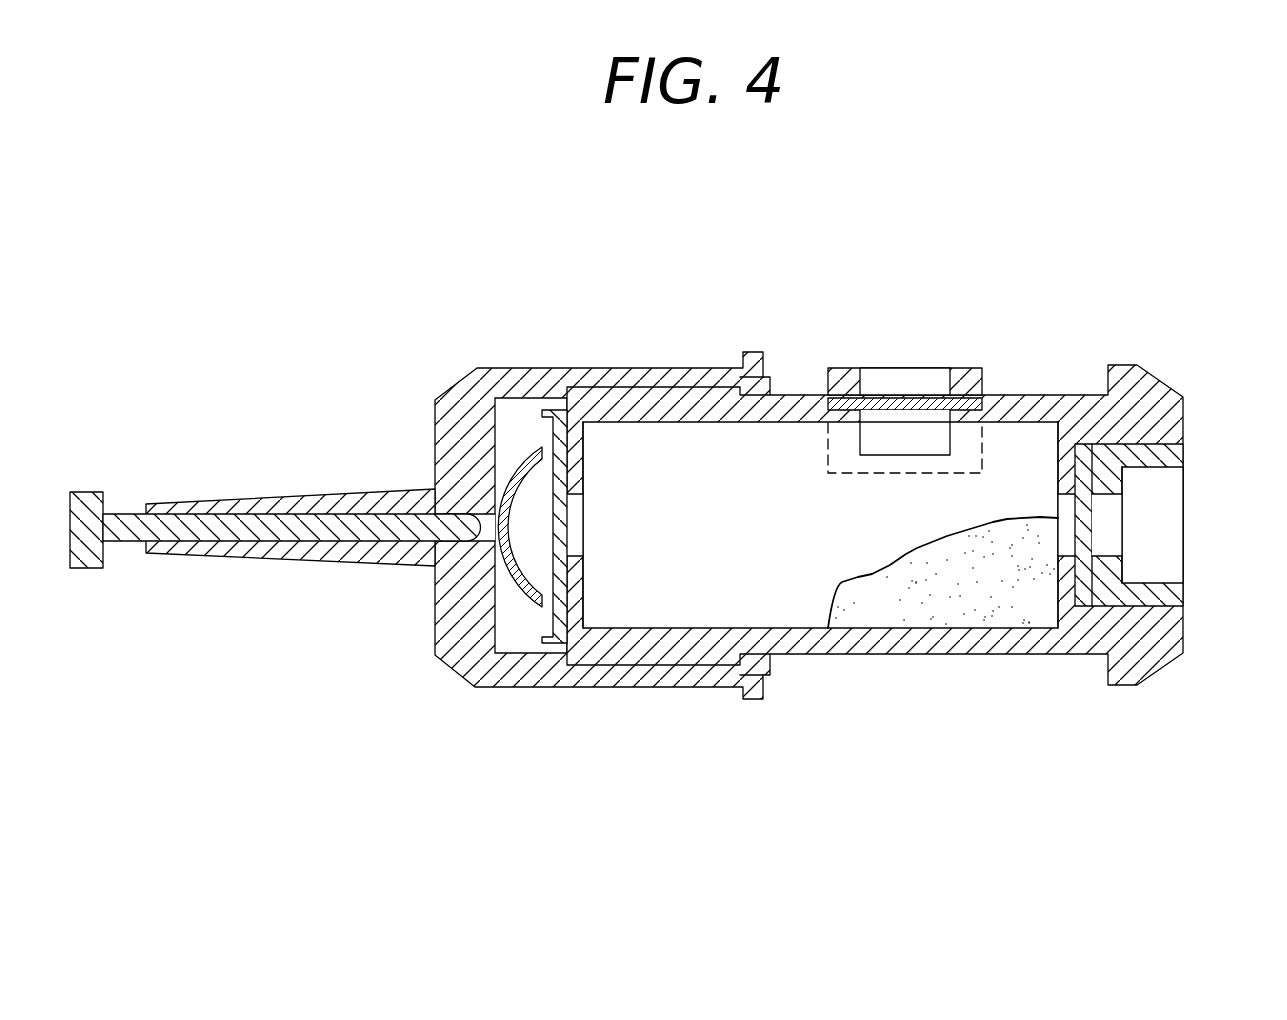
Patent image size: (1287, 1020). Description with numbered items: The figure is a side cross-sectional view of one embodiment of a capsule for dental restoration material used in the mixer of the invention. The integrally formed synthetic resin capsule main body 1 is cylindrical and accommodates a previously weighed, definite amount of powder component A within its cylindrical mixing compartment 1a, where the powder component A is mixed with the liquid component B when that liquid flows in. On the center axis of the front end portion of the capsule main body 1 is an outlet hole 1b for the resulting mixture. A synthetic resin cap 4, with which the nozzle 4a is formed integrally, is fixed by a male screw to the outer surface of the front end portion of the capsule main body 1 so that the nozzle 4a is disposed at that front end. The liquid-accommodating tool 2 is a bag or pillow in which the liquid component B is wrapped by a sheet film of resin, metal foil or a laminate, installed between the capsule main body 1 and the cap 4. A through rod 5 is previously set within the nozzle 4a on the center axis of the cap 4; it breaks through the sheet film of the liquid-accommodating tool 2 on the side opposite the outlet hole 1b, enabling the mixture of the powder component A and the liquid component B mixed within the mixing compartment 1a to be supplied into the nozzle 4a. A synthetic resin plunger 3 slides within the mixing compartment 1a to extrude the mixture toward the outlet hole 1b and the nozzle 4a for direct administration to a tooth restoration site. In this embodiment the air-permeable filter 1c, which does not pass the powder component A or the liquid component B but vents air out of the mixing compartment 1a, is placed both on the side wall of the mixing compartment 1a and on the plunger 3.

The capsule main body 1 is at (1040, 403).
The mixing compartment 1a is at (765, 467).
The outlet hole 1b is at (583, 520).
The air-permeable filter 1c is at (910, 393).
The liquid-accommodating tool 2 is at (510, 613).
The plunger 3 is at (1173, 618).
The cap 4 is at (465, 398).
The nozzle 4a is at (273, 503).
The through rod 5 is at (122, 528).
The powder component A is at (973, 595).
The liquid component B is at (537, 503).